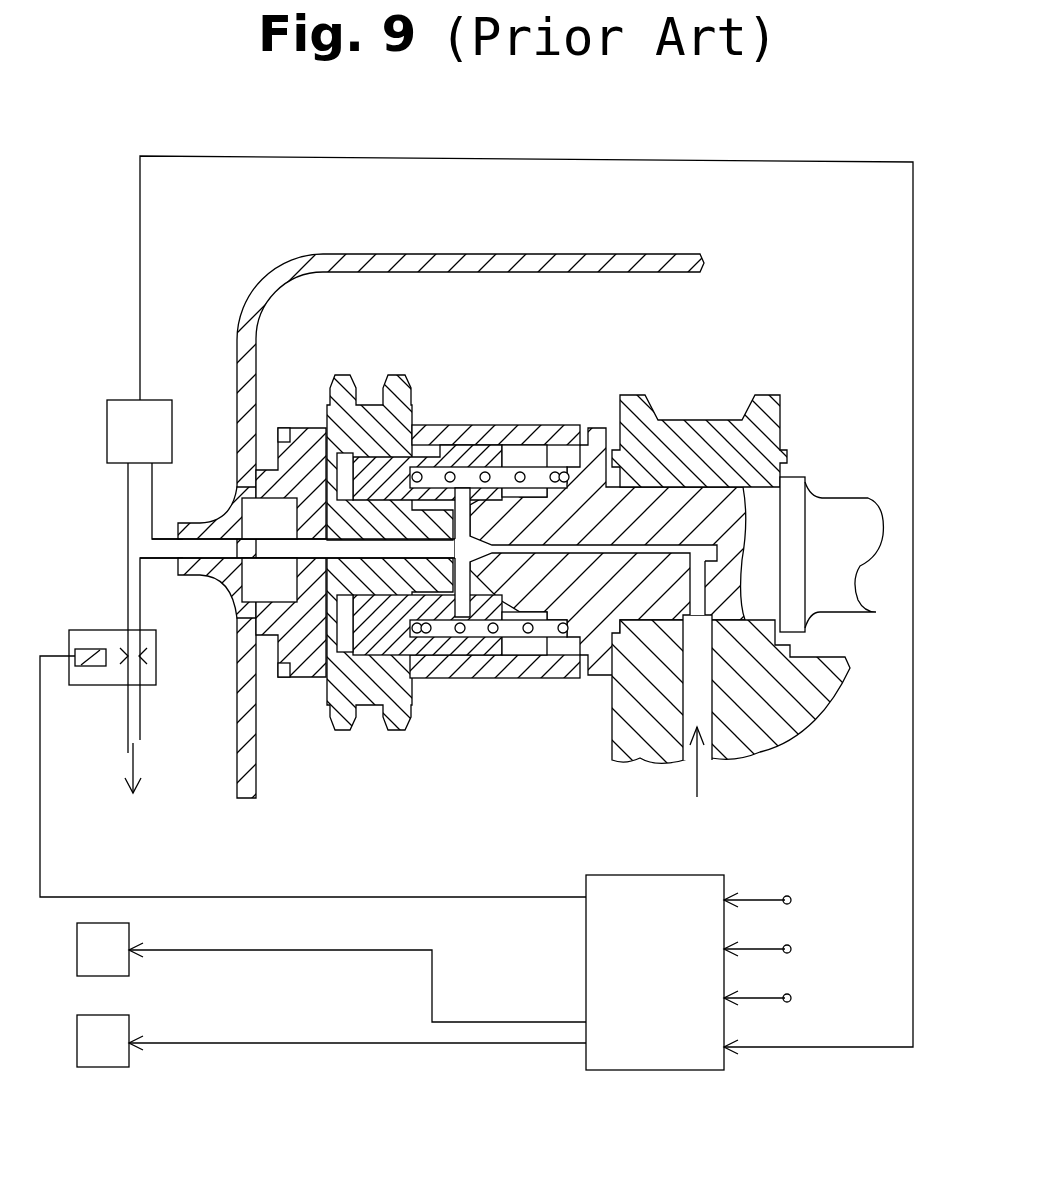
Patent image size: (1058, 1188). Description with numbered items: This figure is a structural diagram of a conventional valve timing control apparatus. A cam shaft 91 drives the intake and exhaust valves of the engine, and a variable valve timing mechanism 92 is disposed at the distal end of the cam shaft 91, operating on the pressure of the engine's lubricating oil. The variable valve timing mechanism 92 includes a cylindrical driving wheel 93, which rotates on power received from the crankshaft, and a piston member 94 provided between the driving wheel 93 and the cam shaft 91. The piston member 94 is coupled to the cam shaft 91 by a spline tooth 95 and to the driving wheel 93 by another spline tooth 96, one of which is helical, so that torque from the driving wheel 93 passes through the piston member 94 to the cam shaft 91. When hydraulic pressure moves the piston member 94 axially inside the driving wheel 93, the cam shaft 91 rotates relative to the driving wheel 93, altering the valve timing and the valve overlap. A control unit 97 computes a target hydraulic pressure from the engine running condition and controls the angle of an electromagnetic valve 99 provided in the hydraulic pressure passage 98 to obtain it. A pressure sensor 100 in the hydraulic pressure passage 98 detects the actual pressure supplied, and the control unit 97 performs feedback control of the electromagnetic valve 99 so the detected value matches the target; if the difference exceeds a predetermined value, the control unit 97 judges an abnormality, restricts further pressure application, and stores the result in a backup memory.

The cam shaft 91 is at (845, 500).
The variable valve timing mechanism 92 is at (495, 562).
The cylindrical driving wheel 93 is at (398, 388).
The piston member 94 is at (433, 633).
The spline tooth 95 is at (362, 632).
The spline tooth 96 is at (428, 631).
The control unit 97 is at (660, 875).
The hydraulic pressure passage 98 is at (130, 497).
The electromagnetic valve 99 is at (95, 628).
The pressure sensor 100 is at (118, 398).